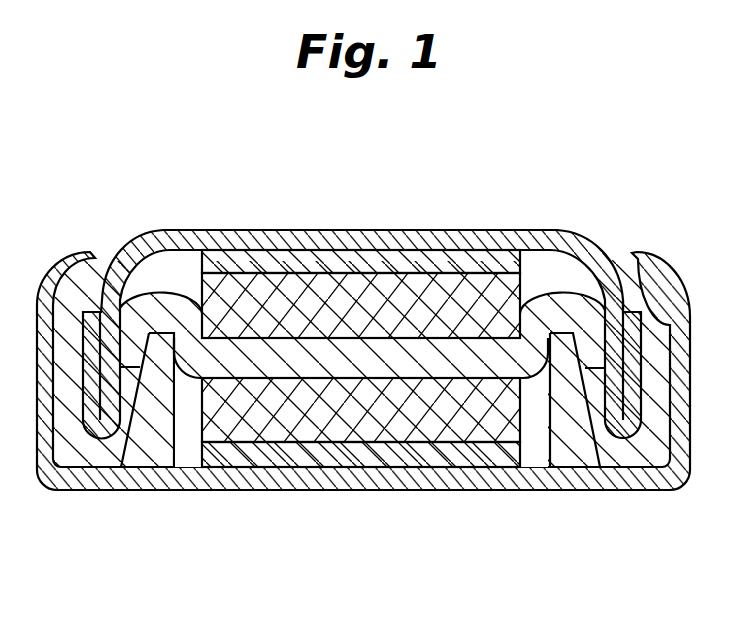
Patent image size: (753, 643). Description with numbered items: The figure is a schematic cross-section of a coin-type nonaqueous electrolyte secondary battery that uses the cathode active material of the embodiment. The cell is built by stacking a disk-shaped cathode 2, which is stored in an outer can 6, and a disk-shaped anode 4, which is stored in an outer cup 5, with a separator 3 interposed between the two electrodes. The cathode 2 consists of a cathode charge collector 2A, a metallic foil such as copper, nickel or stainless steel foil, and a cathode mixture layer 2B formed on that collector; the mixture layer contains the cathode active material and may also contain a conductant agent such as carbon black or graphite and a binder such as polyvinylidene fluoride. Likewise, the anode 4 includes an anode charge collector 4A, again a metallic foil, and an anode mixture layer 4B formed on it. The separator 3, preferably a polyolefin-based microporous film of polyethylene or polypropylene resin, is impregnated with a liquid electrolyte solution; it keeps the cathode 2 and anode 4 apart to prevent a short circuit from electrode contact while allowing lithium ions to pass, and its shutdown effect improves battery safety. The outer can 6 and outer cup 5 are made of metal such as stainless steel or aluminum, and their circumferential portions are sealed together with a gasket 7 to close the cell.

The cathode 2 is at (361, 487).
The cathode charge collector 2A is at (505, 553).
The cathode mixture layer 2B is at (463, 432).
The separator 3 is at (563, 307).
The anode 4 is at (361, 229).
The anode charge collector 4A is at (353, 263).
The anode mixture layer 4B is at (438, 298).
The outer cup 5 is at (265, 237).
The outer can 6 is at (275, 468).
The gasket 7 is at (133, 455).